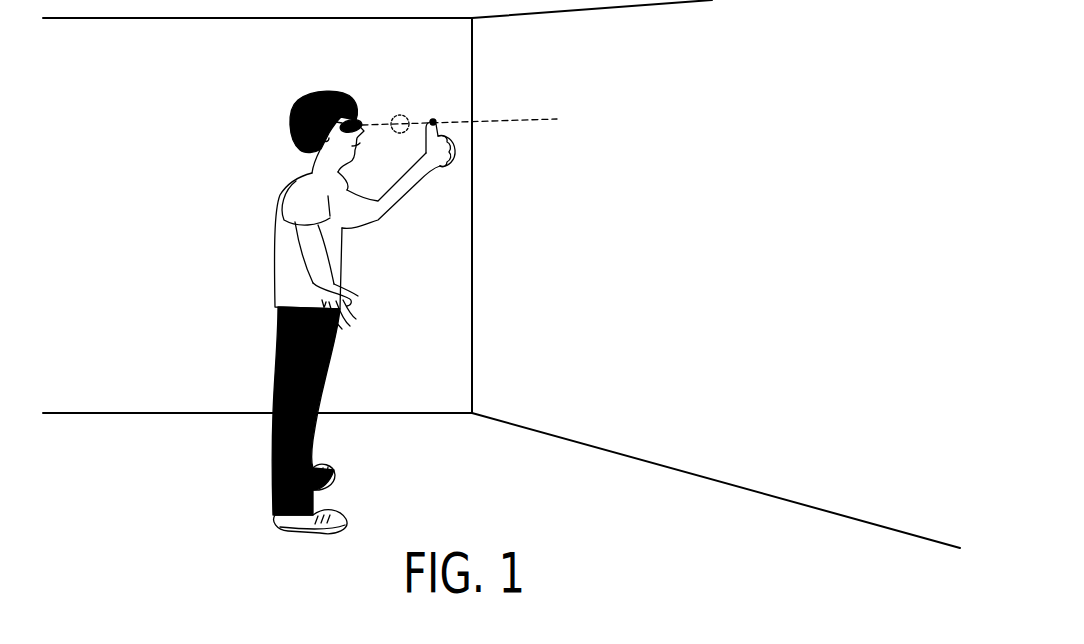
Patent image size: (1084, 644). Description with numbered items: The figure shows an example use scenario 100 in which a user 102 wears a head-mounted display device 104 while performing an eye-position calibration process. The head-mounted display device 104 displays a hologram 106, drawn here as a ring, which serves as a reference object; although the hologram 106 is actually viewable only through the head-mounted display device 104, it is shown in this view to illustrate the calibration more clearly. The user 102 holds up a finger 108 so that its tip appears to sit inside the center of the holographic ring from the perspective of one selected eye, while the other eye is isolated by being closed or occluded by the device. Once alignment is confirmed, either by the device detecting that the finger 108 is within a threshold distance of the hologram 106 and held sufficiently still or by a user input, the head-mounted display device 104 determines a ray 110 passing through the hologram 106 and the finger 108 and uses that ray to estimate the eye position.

The use scenario 100 is at (683, 57).
The user 102 is at (356, 312).
The head-mounted display device 104 is at (360, 124).
The hologram 106 is at (411, 114).
The finger 108 is at (438, 128).
The pointing line / gaze ray 110 is at (523, 118).